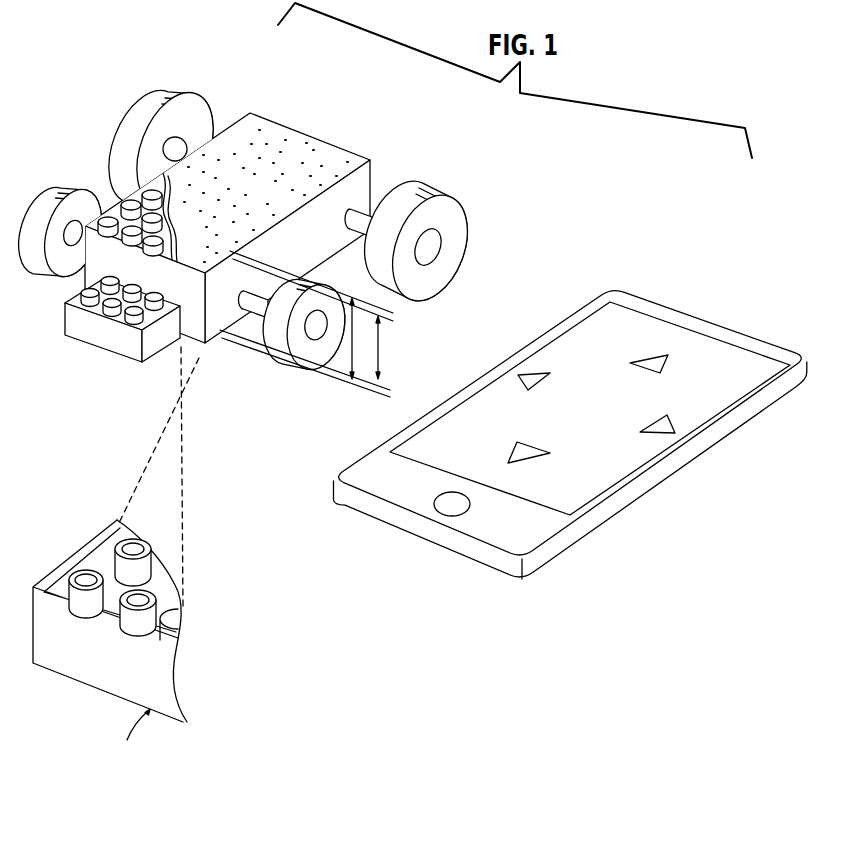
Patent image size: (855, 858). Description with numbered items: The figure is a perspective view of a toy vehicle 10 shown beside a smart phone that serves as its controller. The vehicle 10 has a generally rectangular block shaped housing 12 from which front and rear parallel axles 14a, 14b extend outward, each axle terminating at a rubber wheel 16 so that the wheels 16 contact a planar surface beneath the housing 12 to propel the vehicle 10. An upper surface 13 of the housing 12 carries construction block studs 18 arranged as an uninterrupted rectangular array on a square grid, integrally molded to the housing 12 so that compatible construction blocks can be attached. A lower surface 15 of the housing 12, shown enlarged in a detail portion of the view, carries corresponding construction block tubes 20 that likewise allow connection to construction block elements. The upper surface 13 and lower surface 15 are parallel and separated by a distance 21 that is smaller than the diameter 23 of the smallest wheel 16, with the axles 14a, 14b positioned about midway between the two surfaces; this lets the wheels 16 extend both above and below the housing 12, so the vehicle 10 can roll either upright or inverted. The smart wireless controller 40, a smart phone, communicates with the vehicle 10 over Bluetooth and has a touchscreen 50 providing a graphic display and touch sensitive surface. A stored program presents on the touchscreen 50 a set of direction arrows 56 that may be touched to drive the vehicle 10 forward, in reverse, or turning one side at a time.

The vehicle 10 is at (386, 100).
The housing 12 is at (316, 133).
The upper surface 13 is at (268, 80).
The front axle 14a is at (250, 305).
The rear axle 14b is at (361, 209).
The lower surface 15 is at (252, 382).
The rubber wheel 16 is at (150, 100).
The construction block studs 18 is at (150, 193).
The construction block tubes 20 is at (85, 583).
The distance 21 is at (353, 348).
The diameter 23 is at (380, 362).
The smart wireless controller 40 is at (598, 525).
The touchscreen 50 is at (683, 330).
The direction arrows 56 is at (550, 450).